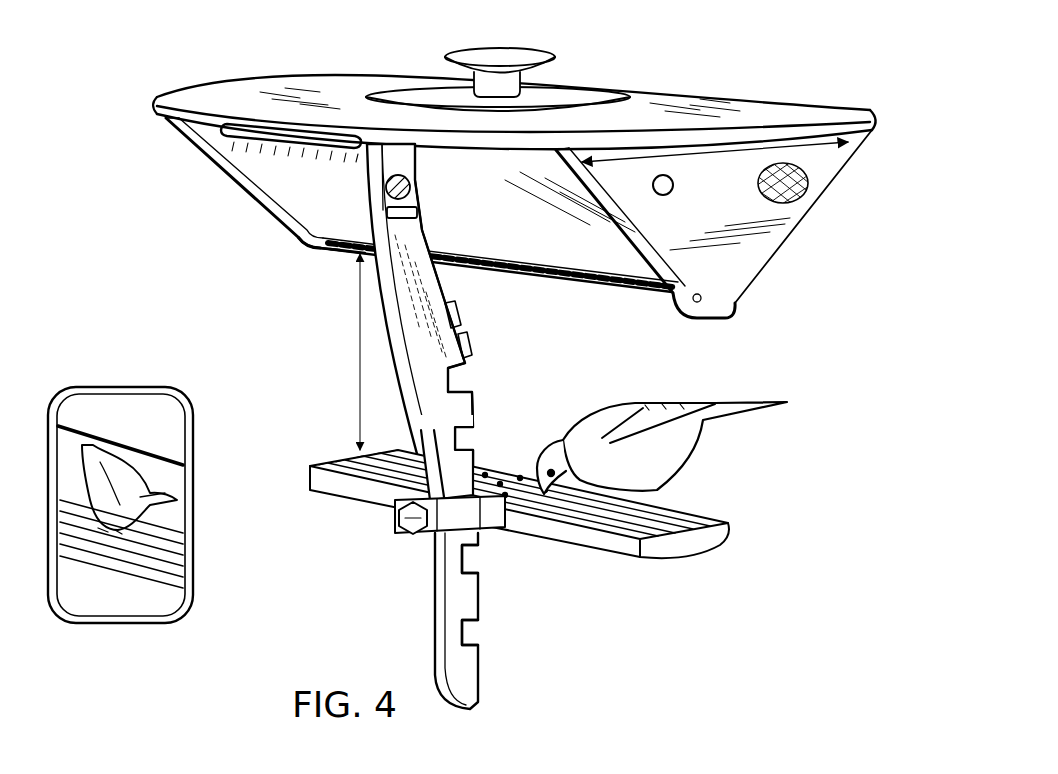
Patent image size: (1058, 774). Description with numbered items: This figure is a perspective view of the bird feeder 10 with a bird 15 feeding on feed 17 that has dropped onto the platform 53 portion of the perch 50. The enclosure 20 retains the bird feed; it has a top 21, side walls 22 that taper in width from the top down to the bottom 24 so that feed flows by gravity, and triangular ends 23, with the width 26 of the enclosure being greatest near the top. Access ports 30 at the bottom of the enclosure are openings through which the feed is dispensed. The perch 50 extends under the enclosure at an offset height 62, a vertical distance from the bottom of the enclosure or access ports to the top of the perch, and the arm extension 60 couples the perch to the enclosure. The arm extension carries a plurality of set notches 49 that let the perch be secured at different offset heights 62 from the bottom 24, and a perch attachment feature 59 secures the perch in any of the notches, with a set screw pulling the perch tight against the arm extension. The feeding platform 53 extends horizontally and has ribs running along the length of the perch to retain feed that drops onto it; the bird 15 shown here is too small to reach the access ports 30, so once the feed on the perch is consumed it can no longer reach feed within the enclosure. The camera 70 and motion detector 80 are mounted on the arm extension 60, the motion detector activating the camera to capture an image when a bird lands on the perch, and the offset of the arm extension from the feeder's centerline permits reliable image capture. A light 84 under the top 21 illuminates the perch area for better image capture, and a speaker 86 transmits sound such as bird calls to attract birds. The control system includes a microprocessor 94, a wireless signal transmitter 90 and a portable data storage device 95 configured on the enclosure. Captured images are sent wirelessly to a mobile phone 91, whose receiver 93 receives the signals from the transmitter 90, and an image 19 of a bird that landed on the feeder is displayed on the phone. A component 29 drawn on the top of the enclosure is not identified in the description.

The bird feeder 10 is at (298, 63).
The bird 15 is at (690, 410).
The feed 17 is at (505, 470).
The image 19 is at (175, 482).
The enclosure 20 is at (657, 110).
The top 21 is at (757, 110).
The side walls 22 is at (293, 243).
The ends 23 is at (200, 153).
The bottom 24 is at (347, 250).
The width 26 is at (857, 152).
The cap 29 is at (597, 90).
The access ports 30 is at (622, 289).
The set notches 49 is at (467, 558).
The perch 50 is at (702, 519).
The platform 53 is at (665, 505).
The perch attachment feature 59 is at (418, 519).
The arm extension 60 is at (467, 600).
The offset height 62 is at (355, 339).
The camera 70 is at (457, 310).
The motion detector 80 is at (468, 345).
The light 84 is at (247, 127).
The speaker 86 is at (803, 187).
The wireless signal transmitter 90 is at (400, 148).
The mobile phone 91 is at (65, 390).
The receiver 93 is at (170, 394).
The microprocessor 94 is at (417, 197).
The portable data storage device 95 is at (387, 203).